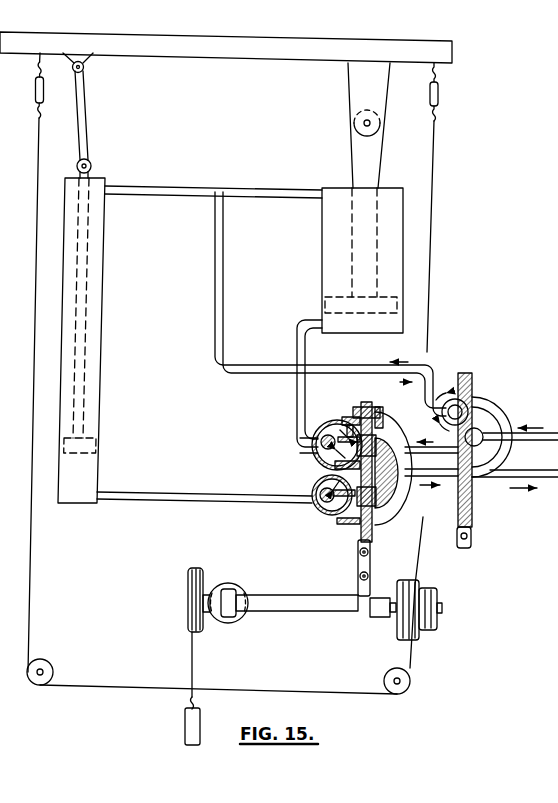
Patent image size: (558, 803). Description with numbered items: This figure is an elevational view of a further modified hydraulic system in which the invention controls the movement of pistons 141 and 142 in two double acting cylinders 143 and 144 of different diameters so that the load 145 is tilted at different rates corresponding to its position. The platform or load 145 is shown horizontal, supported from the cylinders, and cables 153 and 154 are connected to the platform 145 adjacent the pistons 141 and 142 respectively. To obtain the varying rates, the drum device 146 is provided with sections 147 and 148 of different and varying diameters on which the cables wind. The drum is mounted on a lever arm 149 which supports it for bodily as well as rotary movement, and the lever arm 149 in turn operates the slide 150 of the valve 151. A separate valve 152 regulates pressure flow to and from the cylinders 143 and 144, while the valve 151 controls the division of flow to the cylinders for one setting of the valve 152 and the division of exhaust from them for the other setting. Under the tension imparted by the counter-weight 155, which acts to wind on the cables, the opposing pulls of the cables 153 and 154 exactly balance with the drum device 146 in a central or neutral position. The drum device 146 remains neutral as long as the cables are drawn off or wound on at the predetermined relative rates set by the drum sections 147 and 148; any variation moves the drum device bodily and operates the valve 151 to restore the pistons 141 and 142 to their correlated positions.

The piston 141 is at (87, 297).
The piston 142 is at (356, 259).
The double acting cylinder 143 is at (100, 243).
The double acting cylinder 144 is at (322, 219).
The load 145 is at (256, 28).
The drum device 146 is at (390, 618).
The drum section 147 is at (401, 583).
The drum section 148 is at (440, 597).
The lever arm 149 is at (300, 607).
The slide 150 is at (358, 547).
The valve 151 is at (326, 530).
The valve 152 is at (472, 375).
The cable 153 is at (36, 189).
The cable 154 is at (436, 154).
The counter-weight 155 is at (185, 726).